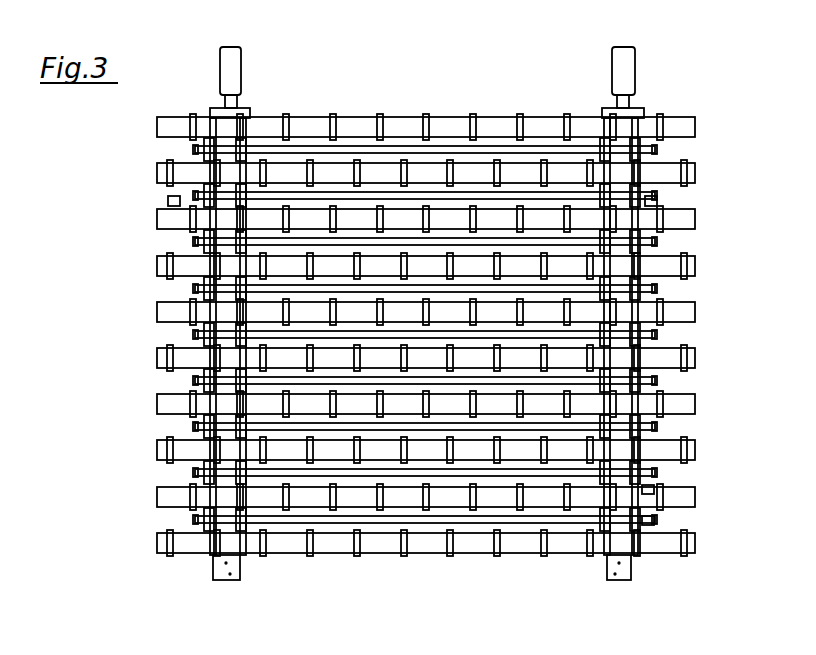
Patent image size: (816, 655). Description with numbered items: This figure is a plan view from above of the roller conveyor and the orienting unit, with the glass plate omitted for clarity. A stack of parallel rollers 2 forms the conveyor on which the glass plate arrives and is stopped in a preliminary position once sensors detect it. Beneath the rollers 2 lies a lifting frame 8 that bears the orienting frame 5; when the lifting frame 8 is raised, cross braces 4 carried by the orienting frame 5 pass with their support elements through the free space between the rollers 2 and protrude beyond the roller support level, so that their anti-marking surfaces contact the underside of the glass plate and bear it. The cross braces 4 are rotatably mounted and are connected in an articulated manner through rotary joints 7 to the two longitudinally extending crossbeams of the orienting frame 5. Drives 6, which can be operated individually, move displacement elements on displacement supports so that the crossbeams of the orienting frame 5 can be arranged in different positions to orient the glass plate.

The roller 2 is at (157, 360).
The cross braces 4 is at (195, 518).
The orienting frame 5 is at (228, 576).
The drive of the displacement elements 6 is at (232, 68).
The rotary joints of the orienting frame 7 is at (655, 488).
The lifting frame for orienting unit 8 is at (168, 202).